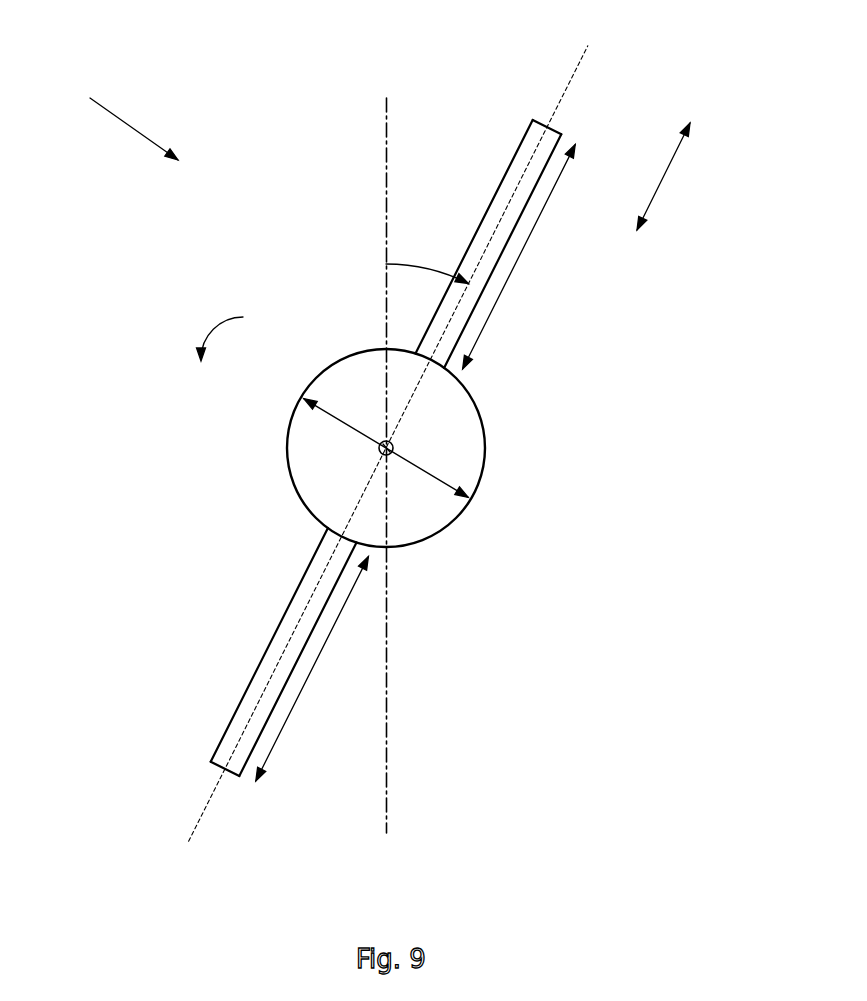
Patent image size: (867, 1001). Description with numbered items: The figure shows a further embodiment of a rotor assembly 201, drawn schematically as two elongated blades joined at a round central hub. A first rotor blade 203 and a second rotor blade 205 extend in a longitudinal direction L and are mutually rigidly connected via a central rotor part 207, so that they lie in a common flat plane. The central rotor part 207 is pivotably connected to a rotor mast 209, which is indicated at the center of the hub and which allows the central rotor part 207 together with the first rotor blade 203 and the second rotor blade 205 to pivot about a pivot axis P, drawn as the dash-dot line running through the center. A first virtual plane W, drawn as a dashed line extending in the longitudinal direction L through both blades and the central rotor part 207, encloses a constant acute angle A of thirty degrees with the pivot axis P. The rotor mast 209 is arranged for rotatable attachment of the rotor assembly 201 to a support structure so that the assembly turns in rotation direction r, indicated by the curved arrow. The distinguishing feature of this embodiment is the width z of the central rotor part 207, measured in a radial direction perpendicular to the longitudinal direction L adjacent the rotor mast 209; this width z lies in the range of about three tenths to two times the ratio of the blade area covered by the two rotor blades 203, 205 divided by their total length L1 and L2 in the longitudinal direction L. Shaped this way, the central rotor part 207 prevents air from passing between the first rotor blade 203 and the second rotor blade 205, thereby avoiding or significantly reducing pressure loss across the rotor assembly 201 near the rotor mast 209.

The rotor assembly 201 is at (112, 116).
The first rotor blade 203 is at (240, 703).
The second rotor blade 205 is at (514, 152).
The central rotor part 207 is at (291, 468).
The rotor mast 209 is at (394, 449).
The first virtual plane W is at (580, 58).
The pivot axis P is at (388, 742).
The blade angle A is at (427, 263).
The rotation direction r is at (218, 333).
The width of the central rotor part z is at (437, 483).
The longitudinal direction L is at (667, 176).
The length of the first rotor blade L1 is at (519, 257).
The length of the second rotor blade L2 is at (312, 669).